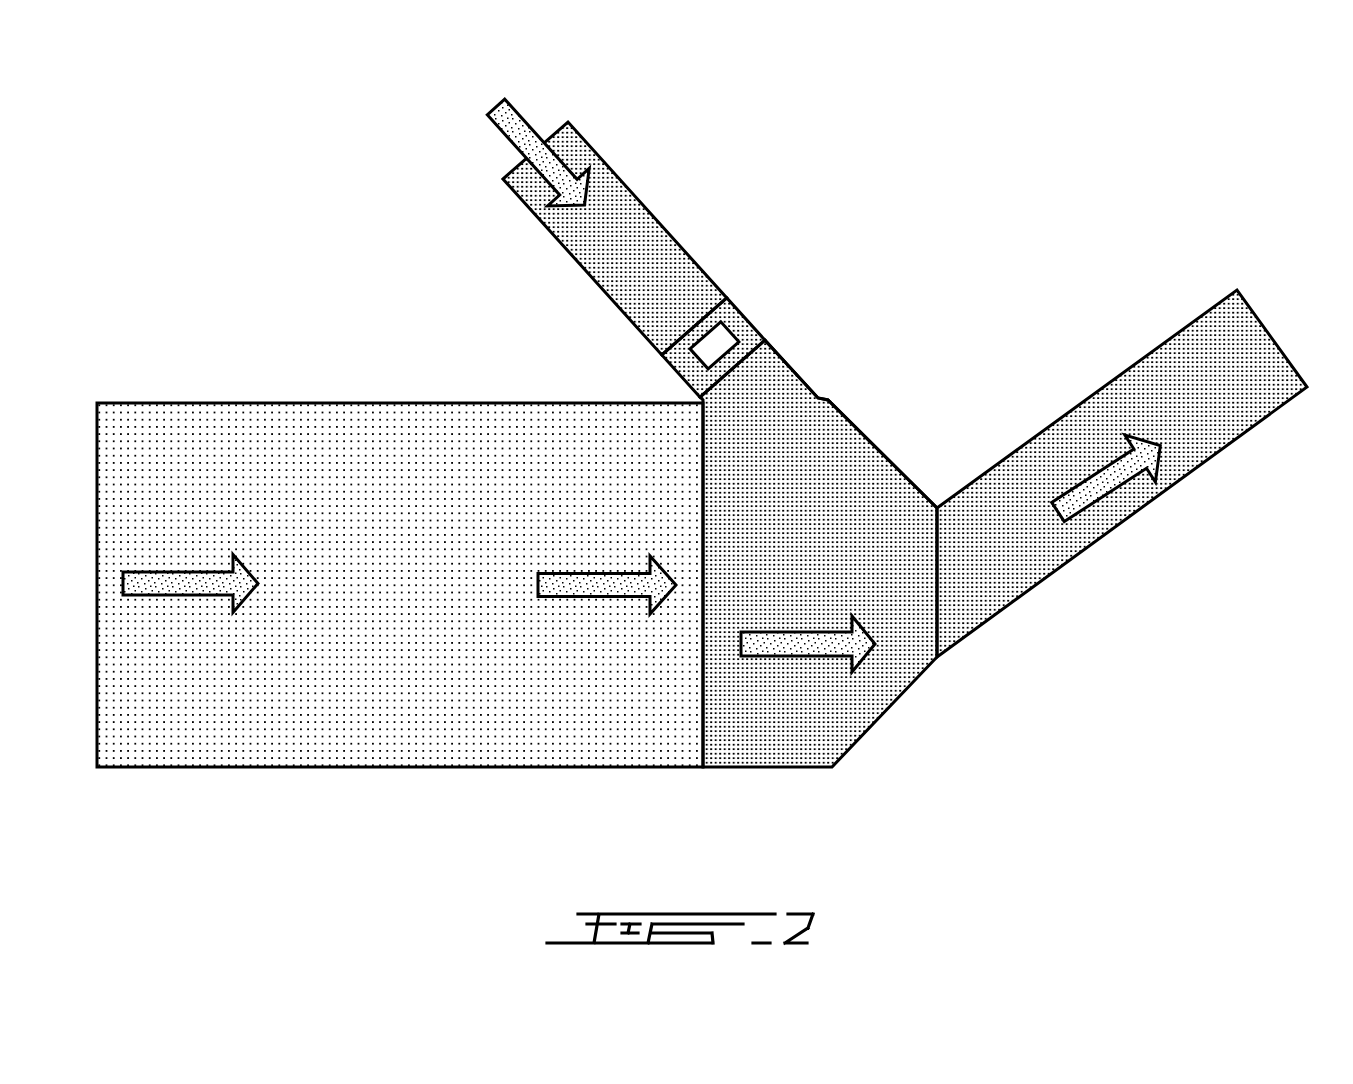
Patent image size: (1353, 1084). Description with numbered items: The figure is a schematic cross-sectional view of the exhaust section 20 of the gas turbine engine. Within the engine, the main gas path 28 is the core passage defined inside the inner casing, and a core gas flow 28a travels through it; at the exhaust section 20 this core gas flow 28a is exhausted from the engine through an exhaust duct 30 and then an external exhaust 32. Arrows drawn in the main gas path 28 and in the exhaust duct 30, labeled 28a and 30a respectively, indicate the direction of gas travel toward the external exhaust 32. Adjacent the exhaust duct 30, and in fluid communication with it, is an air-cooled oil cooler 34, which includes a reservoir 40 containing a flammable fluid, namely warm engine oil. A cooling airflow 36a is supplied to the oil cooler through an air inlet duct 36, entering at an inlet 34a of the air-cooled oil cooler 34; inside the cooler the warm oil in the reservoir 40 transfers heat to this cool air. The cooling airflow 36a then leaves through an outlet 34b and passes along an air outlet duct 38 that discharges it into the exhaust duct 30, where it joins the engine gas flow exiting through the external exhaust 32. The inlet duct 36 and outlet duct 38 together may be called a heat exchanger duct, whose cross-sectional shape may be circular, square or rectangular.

The exhaust section 20 is at (1047, 203).
The main gas path 28 is at (325, 702).
The core gas flow 28a is at (177, 598).
The exhaust duct 30 is at (783, 720).
The light propagation direction in second section 30a is at (823, 650).
The external exhaust 32 is at (994, 571).
The air-cooled oil cooler 34 is at (720, 297).
The inlet 34a is at (690, 327).
The outlet 34b is at (760, 350).
The air inlet duct 36 is at (670, 208).
The cooling airflow 36a is at (522, 137).
The air outlet duct 38 is at (820, 373).
The reservoir 40 is at (708, 347).